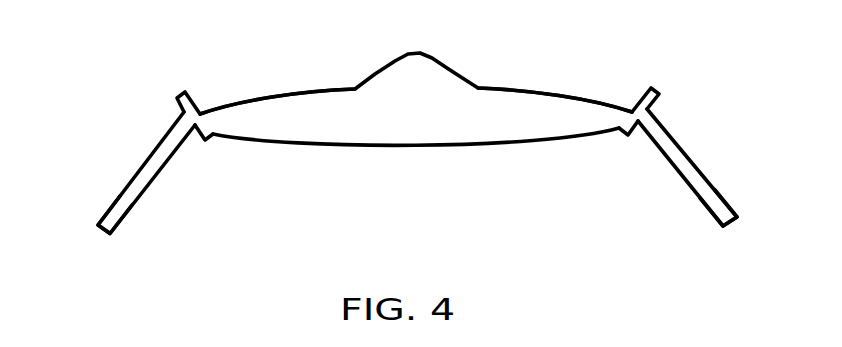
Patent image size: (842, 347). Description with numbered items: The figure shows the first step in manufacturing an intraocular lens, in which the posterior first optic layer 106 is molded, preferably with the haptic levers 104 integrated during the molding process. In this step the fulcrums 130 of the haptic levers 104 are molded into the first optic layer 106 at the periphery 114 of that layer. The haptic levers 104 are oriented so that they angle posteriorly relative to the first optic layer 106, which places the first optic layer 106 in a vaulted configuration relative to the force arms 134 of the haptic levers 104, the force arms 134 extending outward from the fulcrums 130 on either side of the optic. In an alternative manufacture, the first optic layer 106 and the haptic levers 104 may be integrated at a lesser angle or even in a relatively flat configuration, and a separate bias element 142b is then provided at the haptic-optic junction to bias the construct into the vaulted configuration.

The haptic lever 104 is at (133, 182).
The posterior first optic layer 106 is at (452, 132).
The periphery of the first optic layer 114 is at (222, 118).
The fulcrum 130 is at (201, 118).
The force arm 134 is at (140, 197).
The bias element 142b is at (206, 147).